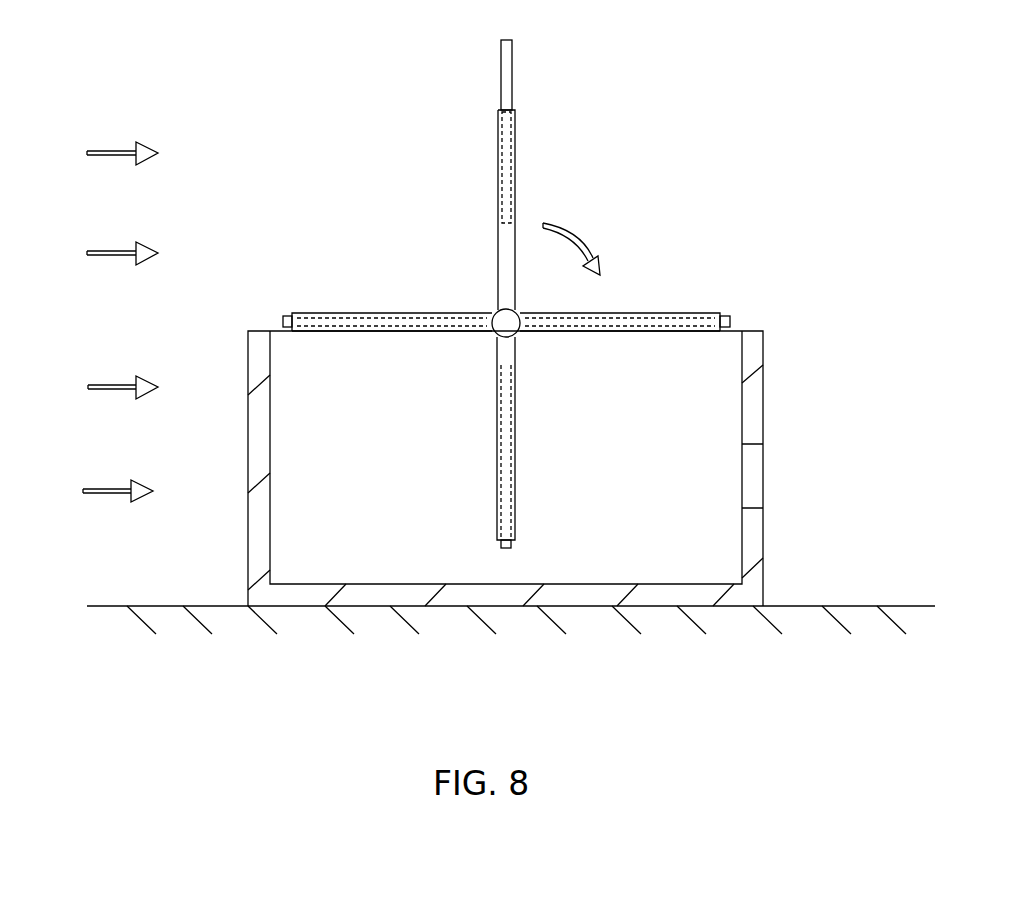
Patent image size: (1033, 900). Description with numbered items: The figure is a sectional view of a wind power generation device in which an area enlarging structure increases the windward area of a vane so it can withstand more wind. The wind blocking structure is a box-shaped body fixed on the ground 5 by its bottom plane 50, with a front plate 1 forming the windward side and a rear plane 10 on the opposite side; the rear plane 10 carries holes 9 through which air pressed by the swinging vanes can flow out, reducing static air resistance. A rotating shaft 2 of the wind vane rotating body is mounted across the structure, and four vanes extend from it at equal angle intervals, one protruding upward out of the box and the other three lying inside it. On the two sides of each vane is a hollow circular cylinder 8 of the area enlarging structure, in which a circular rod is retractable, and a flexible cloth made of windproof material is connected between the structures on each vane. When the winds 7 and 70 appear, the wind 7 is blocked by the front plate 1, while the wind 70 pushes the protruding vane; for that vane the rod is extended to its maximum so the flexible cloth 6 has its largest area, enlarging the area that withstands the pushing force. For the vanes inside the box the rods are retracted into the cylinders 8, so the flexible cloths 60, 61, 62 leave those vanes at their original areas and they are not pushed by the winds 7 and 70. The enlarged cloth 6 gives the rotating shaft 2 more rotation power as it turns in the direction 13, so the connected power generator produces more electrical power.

The front plate 1 is at (248, 538).
The rotating shaft 2 is at (497, 315).
The ground 5 is at (857, 605).
The flexible cloth 6 is at (506, 72).
The wind 7 is at (88, 385).
The hollow circular cylinder 8 is at (515, 210).
The holes 9 is at (748, 477).
The rear plane 10 is at (765, 387).
The direction 13 is at (578, 232).
The bottom plane 50 is at (368, 598).
The flexible cloth 60 is at (732, 320).
The flexible cloth 61 is at (512, 544).
The flexible cloth 62 is at (283, 320).
The wind 70 is at (87, 151).